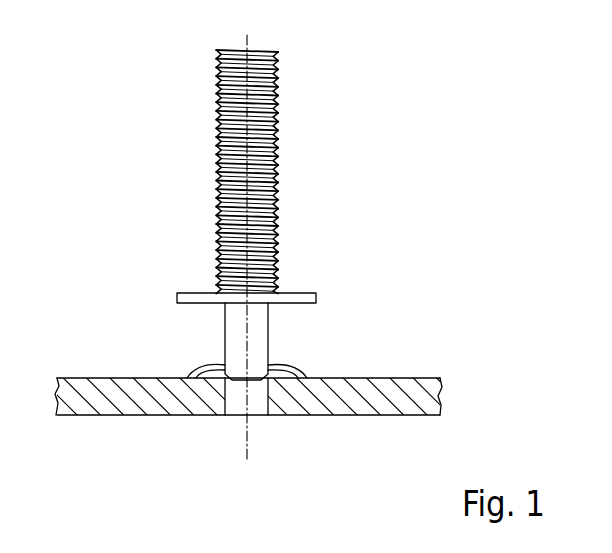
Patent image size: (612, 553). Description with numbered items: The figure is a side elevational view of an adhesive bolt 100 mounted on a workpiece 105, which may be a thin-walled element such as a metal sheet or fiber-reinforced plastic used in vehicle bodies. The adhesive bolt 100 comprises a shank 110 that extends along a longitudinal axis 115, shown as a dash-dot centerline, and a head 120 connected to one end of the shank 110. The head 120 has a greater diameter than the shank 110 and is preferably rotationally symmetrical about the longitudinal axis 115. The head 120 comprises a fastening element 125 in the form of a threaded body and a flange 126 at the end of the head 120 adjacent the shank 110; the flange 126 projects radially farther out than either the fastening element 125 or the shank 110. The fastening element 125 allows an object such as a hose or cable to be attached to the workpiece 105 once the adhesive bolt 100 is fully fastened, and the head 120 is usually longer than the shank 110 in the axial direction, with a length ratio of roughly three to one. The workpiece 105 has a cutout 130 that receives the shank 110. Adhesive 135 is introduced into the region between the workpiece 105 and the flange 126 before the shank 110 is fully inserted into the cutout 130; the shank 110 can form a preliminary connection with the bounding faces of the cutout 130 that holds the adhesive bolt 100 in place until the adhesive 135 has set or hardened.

The adhesive bolt 100 is at (97, 190).
The workpiece 105 is at (432, 393).
The shank 110 is at (195, 342).
The longitudinal axis 115 is at (247, 451).
The head 120 is at (153, 252).
The fastening element 125 is at (291, 268).
The flange 126 is at (315, 295).
The cutout 130 is at (233, 413).
The adhesive 135 is at (310, 356).